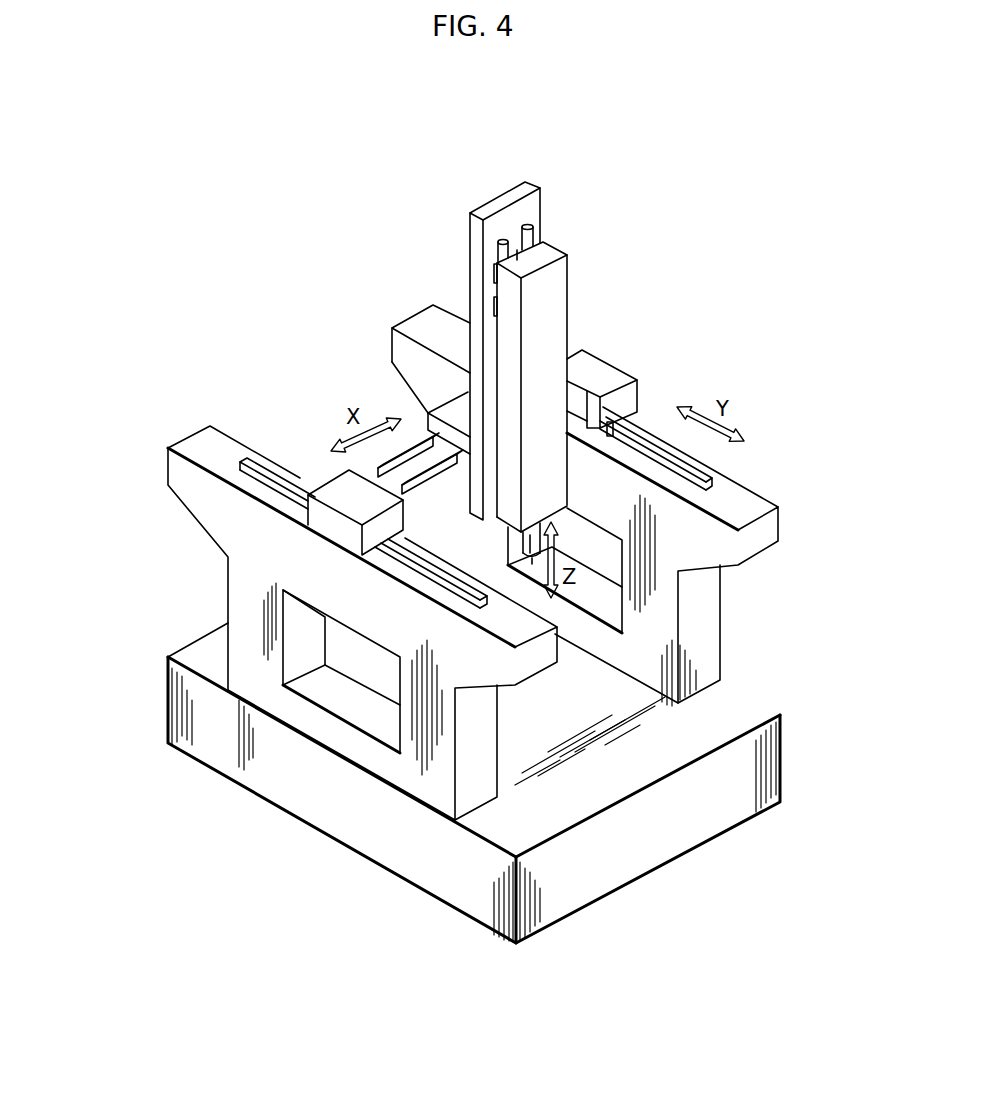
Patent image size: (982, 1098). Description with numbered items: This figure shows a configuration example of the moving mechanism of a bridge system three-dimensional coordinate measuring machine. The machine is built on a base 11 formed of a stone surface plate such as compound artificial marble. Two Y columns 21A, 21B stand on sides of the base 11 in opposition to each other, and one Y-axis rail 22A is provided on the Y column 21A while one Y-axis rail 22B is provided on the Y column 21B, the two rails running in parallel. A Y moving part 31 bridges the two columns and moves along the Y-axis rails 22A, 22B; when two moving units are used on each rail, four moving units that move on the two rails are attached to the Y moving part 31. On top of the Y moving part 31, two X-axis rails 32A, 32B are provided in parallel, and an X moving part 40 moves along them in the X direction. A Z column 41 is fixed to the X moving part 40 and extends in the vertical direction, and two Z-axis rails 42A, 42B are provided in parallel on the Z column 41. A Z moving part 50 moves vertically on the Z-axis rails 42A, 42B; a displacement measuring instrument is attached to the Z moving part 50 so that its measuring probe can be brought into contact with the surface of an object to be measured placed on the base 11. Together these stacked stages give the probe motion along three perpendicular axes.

The base 11 is at (675, 836).
The Y column 21A is at (708, 635).
The Y column 21B is at (427, 777).
The Y-axis rail 22A is at (704, 468).
The Y-axis rail 22B is at (240, 461).
The Y moving part 31 is at (332, 528).
The X-axis rail 32A is at (420, 437).
The X-axis rail 32B is at (385, 488).
The X moving part 40 is at (605, 372).
The Z column 41 is at (528, 188).
The Z-axis rail 42A is at (528, 237).
The Z-axis rail 42B is at (500, 247).
The Z moving part 50 is at (552, 292).